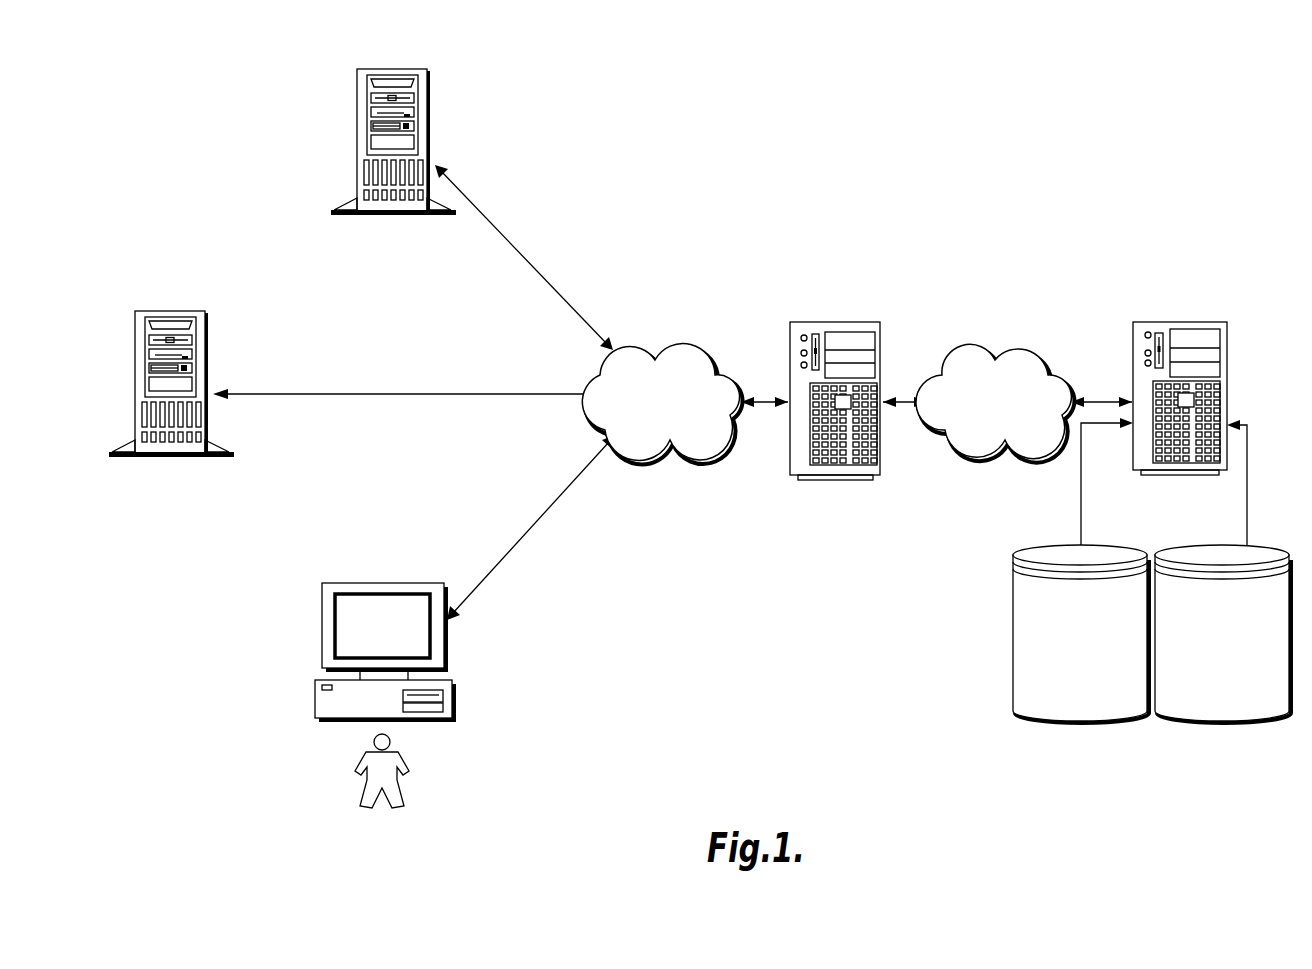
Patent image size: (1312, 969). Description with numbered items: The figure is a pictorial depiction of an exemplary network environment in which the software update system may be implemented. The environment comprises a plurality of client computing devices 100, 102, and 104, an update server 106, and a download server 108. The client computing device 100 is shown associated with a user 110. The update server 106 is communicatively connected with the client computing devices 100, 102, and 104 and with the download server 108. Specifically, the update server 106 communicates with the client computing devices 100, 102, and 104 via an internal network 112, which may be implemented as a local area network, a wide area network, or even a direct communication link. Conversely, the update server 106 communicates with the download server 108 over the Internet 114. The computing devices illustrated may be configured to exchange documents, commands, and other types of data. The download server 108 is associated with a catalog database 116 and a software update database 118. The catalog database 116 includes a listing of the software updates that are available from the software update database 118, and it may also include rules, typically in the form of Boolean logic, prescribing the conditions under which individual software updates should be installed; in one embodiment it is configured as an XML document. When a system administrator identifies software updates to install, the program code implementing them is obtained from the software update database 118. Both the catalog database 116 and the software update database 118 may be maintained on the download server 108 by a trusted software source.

The client computing device 100 is at (448, 632).
The client computing device 102 is at (202, 457).
The client computing device 104 is at (357, 105).
The update server 106 is at (837, 325).
The download server 108 is at (1180, 322).
The user 110 is at (406, 799).
The internal network 112 is at (682, 347).
The Internet 114 is at (1035, 348).
The catalog database 116 is at (1013, 620).
The software update database 118 is at (1255, 725).